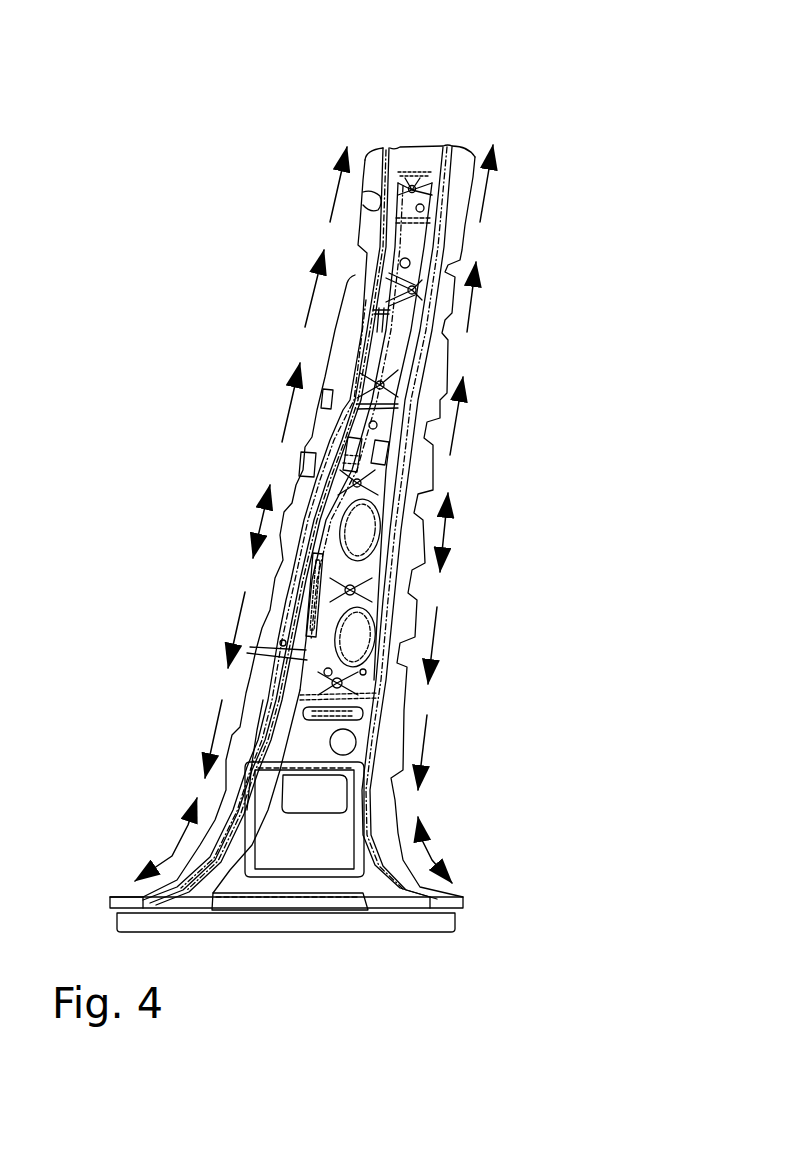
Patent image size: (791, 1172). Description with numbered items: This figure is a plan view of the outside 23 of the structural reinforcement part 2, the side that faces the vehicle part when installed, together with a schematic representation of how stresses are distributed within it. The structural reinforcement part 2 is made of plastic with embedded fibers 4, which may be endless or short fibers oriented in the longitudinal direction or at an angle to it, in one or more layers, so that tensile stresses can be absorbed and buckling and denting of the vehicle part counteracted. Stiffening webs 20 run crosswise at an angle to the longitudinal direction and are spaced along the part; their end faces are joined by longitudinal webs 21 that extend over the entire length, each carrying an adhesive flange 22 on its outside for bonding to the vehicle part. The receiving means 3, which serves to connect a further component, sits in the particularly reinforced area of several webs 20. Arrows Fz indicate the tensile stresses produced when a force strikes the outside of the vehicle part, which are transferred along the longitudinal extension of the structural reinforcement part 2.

The structural reinforcement part 2 is at (250, 192).
The receiving means 3 is at (323, 603).
The fibers 4 is at (410, 245).
The webs 20 is at (303, 680).
The longitudinal webs 21 is at (367, 330).
The adhesive flange 22 is at (323, 470).
The outside 23 is at (425, 157).
The tensile stresses Fz is at (455, 422).